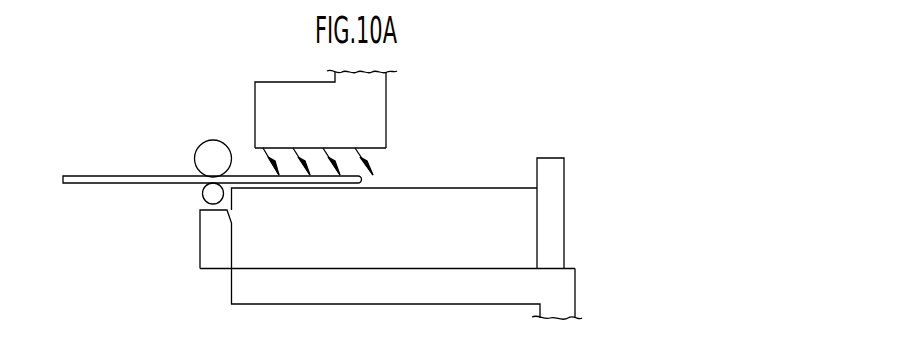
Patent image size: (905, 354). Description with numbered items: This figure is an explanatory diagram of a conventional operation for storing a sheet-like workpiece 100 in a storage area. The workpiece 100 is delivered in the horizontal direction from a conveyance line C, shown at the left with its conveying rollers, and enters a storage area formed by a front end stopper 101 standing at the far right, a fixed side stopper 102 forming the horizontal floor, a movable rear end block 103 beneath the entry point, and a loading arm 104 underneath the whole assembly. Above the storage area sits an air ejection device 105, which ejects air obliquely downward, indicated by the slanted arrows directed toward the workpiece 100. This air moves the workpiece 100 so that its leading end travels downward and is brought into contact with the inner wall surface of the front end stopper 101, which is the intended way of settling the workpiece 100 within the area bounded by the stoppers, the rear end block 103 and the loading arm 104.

The workpiece 100 is at (117, 176).
The conveyance line C is at (199, 142).
The front end stopper 101 is at (548, 160).
The fixed side stopper 102 is at (480, 199).
The movable rear end block 103 is at (210, 246).
The loading arm 104 is at (242, 289).
The air ejection device 105 is at (376, 93).